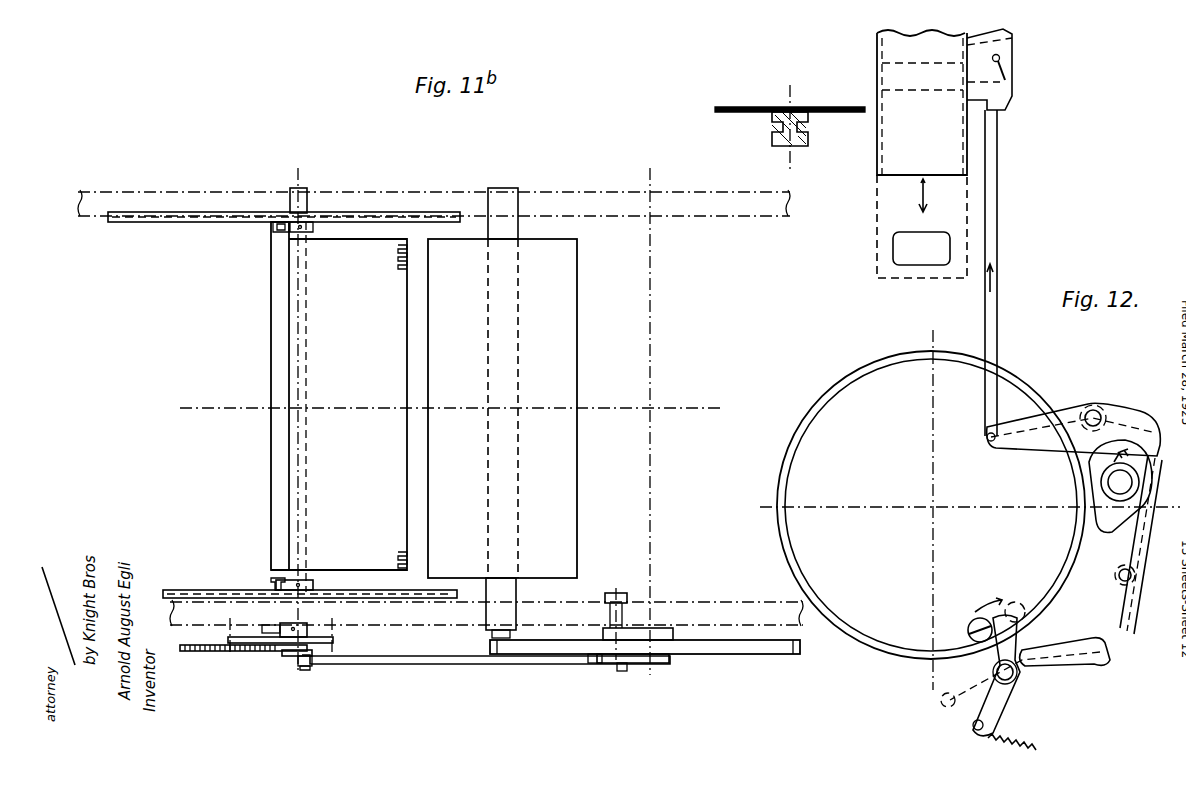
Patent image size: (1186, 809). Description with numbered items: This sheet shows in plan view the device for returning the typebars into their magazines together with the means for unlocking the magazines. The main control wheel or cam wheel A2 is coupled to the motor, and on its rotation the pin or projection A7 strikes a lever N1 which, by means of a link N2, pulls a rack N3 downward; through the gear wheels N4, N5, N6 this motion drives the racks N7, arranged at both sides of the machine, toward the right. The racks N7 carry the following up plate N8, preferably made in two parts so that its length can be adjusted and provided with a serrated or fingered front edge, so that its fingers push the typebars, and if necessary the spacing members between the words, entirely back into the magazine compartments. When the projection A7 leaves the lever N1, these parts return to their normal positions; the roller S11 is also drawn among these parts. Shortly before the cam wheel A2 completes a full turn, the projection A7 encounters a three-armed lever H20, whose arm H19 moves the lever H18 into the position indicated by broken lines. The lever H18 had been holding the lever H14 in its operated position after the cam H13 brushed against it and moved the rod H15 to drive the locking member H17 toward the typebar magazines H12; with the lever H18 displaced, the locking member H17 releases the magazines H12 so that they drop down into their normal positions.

In FIG. 11B, the roller / rail section S11 is at (572, 322).
In FIG. 11B, the racks N7 is at (204, 221).
In FIG. 11B, the following up plate N8 is at (339, 390).
In FIG. 11B, the gear wheel N6 is at (303, 589).
In FIG. 11B, the gear wheel N5 is at (336, 641).
In FIG. 11B, the rack N3 is at (196, 651).
In FIG. 11B, the gear wheel N4 is at (290, 640).
In FIG. 11B, the link N2 is at (426, 664).
In FIG. 11B, the cam wheel A2 is at (740, 650).
In FIG. 12, the cam wheel A2 is at (838, 386).
In FIG. 11B, the lever N1 is at (637, 656).
In FIG. 11B, the projection A7 is at (597, 661).
In FIG. 12, the projection A7 is at (969, 628).
In FIG. 12, the typebar magazine H12 is at (922, 154).
In FIG. 12, the locking member H17 is at (1007, 93).
In FIG. 12, the rod H15 is at (998, 175).
In FIG. 12, the lever H14 is at (1073, 424).
In FIG. 12, the cam H13 is at (1116, 500).
In FIG. 12, the lever H18 is at (1118, 600).
In FIG. 12, the arm H19 is at (1067, 660).
In FIG. 12, the three-armed lever H20 is at (996, 705).